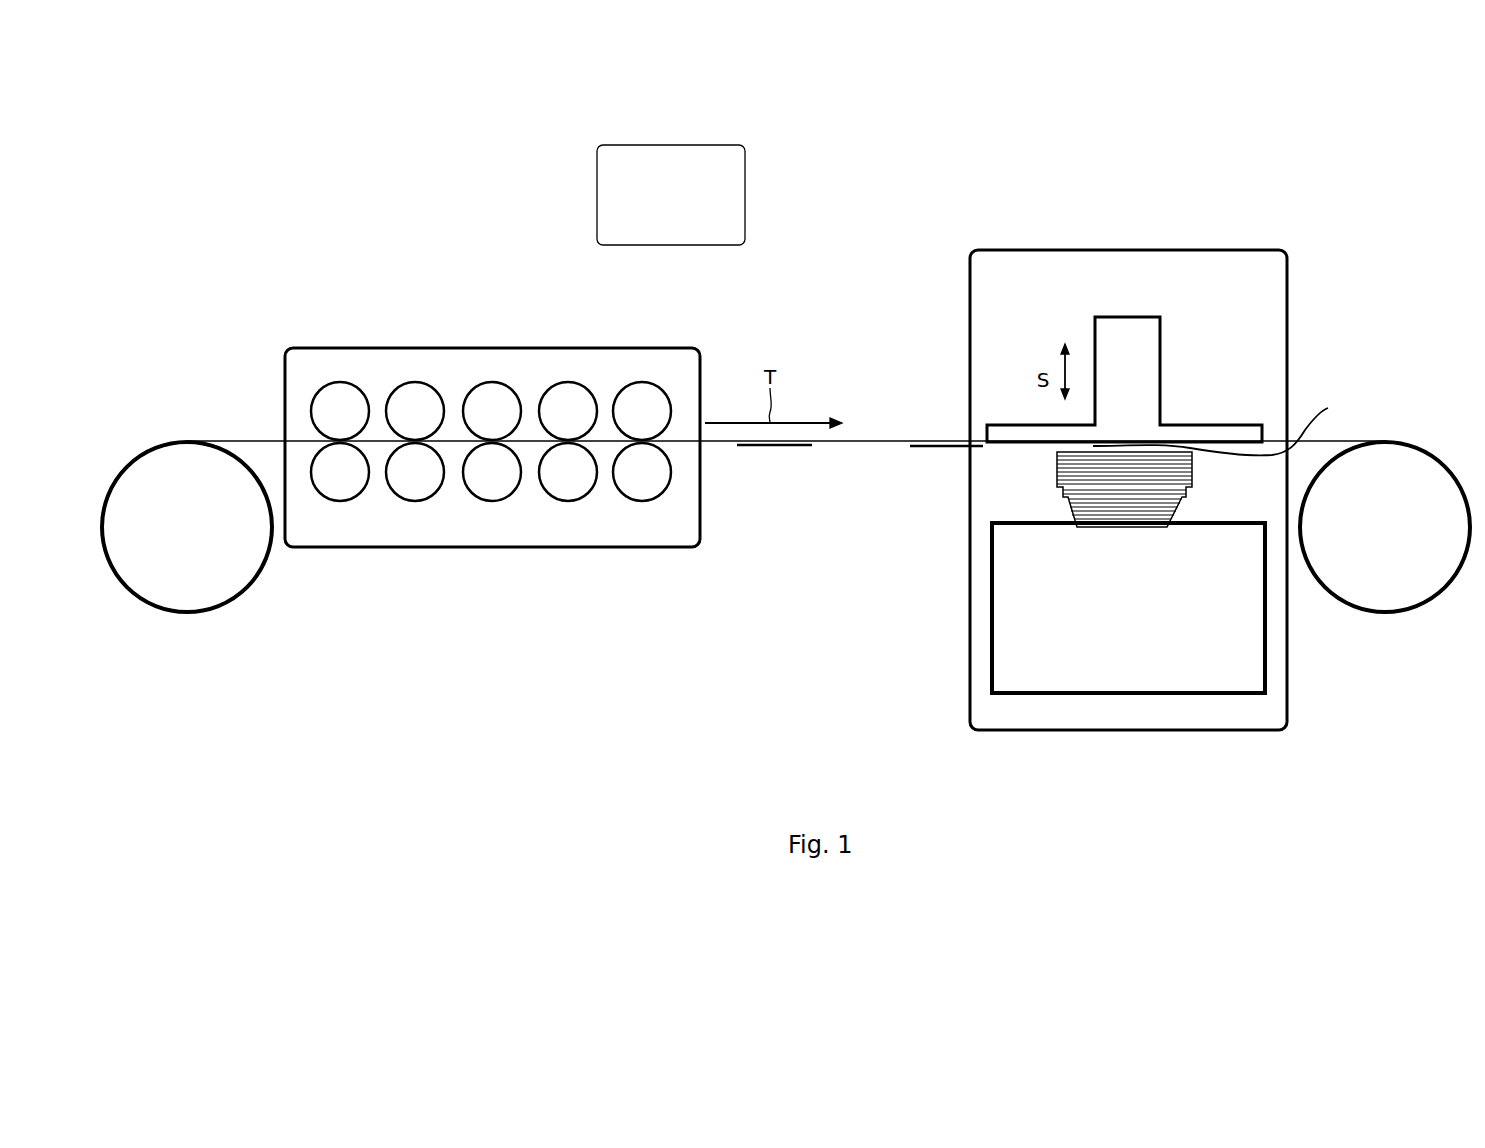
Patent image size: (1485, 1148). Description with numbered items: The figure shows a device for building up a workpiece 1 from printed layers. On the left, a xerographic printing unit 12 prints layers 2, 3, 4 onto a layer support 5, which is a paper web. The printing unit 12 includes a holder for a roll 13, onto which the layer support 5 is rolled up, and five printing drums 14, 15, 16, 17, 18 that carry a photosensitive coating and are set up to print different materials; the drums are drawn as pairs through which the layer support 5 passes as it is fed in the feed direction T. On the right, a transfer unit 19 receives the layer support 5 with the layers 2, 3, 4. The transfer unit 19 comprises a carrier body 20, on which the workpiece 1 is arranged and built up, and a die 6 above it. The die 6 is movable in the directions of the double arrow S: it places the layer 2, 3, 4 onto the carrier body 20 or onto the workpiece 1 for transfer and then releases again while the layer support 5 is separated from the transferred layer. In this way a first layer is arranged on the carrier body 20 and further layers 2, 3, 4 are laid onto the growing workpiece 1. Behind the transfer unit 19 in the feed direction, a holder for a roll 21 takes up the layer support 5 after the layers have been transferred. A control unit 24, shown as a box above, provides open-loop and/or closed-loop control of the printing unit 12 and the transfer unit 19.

The workpiece 1 is at (1062, 487).
The layer 2 is at (790, 447).
The layer 3 is at (935, 447).
The layer 4 is at (1215, 419).
The layer support 5 is at (260, 440).
The die 6 is at (1148, 395).
The xerographic printing unit 12 is at (428, 348).
The roll 13 is at (192, 614).
The printing drum 14 is at (340, 501).
The printing drum 15 is at (415, 501).
The printing drum 16 is at (492, 501).
The printing drum 17 is at (568, 501).
The printing drum 18 is at (642, 501).
The transfer unit 19 is at (1020, 250).
The carrier body 20 is at (992, 623).
The roll 21 is at (1388, 614).
The control unit 24 is at (671, 195).